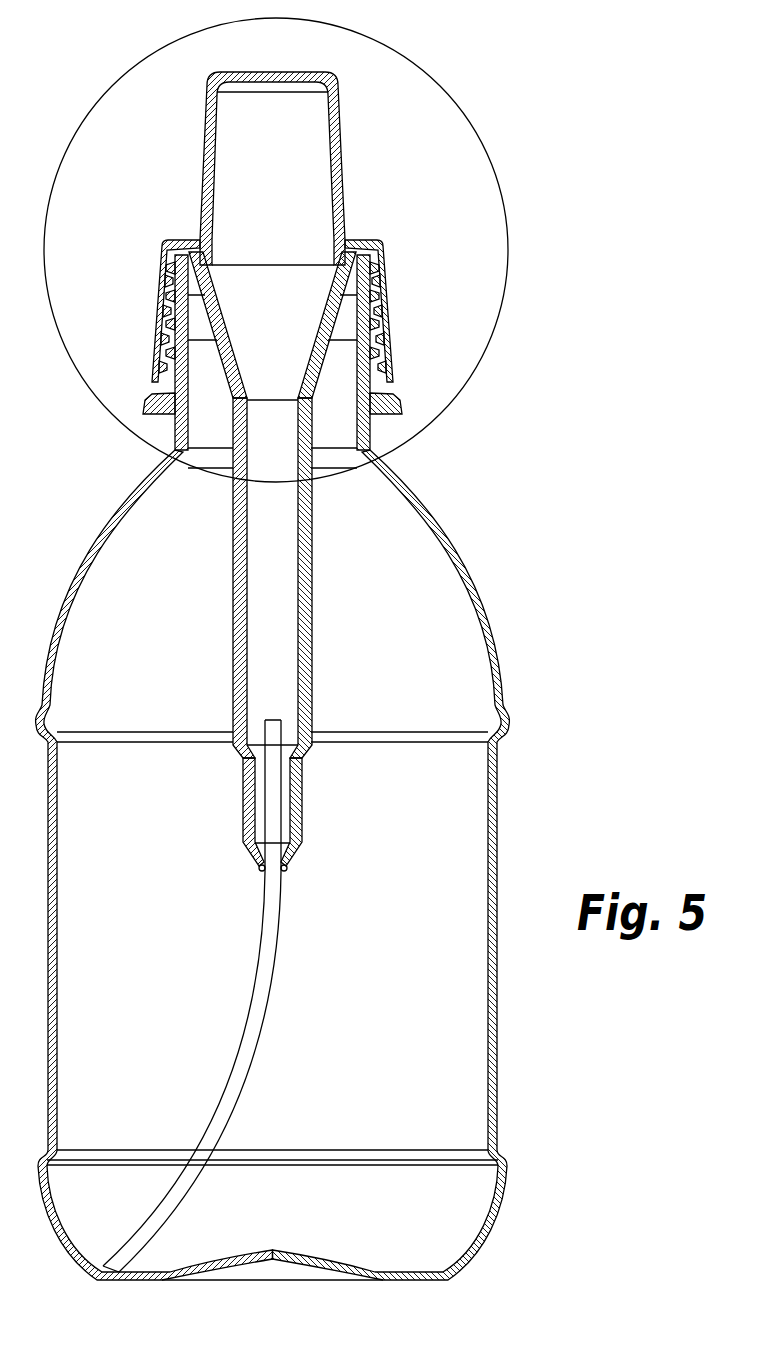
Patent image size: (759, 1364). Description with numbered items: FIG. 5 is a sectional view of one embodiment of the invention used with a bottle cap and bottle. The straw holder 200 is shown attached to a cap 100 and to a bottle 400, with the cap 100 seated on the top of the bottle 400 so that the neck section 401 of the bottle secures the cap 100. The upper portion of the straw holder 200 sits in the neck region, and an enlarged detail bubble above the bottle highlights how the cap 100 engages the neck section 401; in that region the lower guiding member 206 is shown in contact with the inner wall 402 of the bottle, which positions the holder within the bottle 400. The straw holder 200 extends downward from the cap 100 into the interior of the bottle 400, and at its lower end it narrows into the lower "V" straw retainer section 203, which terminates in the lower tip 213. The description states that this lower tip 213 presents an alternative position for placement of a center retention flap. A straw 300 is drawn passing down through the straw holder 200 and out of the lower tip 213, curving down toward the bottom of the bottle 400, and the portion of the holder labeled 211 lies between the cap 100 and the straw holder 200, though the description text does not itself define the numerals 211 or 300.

The cap 100 is at (292, 189).
The straw holder 200 is at (318, 593).
The lower "V" straw retainer section 203 is at (293, 858).
The lower guiding member 206 is at (172, 386).
The funnel 211 is at (292, 339).
The lower tip 213 is at (261, 872).
The straw 300 is at (256, 1046).
The bottle 400 is at (508, 740).
The neck section 401 is at (387, 242).
The inner wall 402 is at (352, 412).